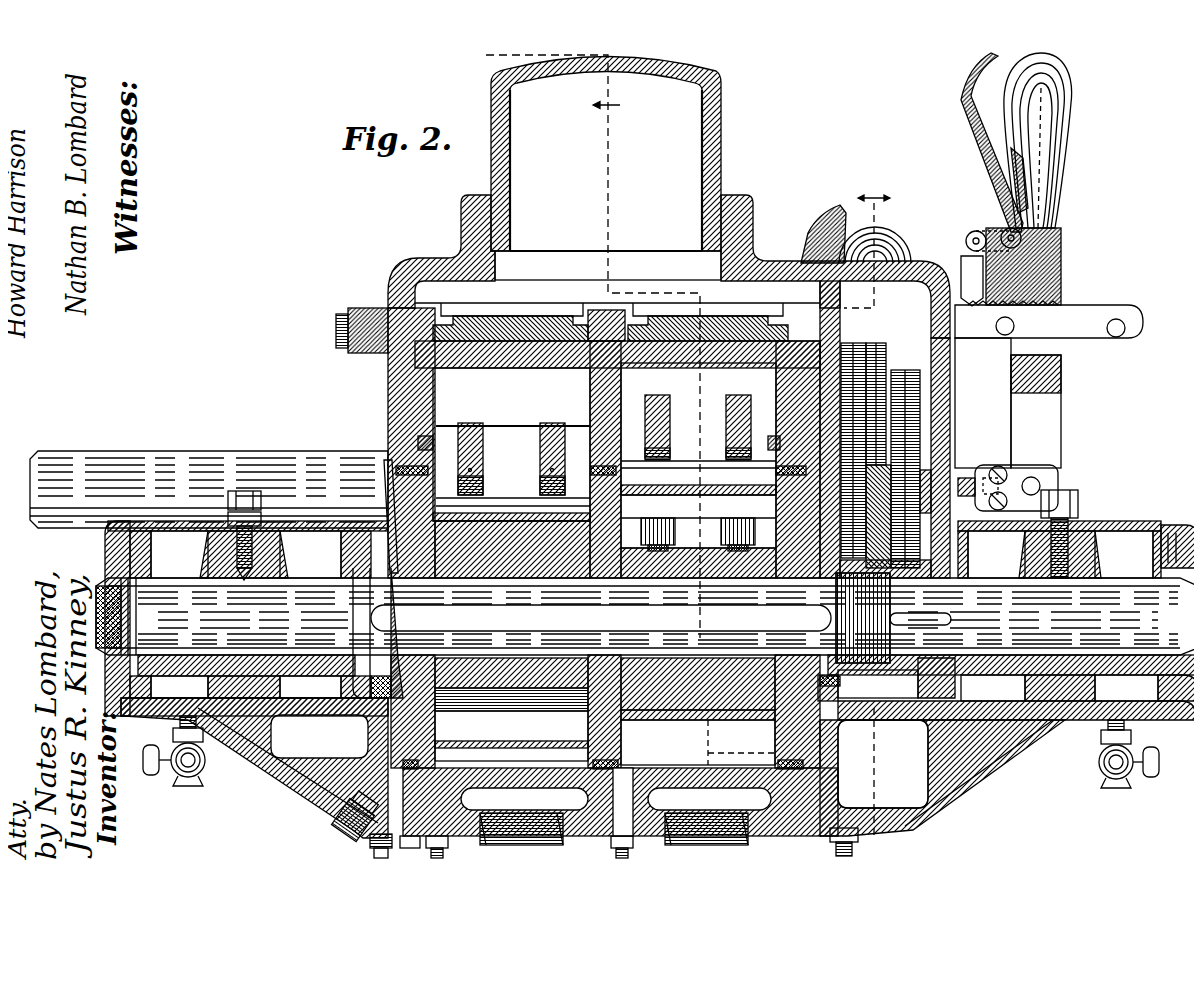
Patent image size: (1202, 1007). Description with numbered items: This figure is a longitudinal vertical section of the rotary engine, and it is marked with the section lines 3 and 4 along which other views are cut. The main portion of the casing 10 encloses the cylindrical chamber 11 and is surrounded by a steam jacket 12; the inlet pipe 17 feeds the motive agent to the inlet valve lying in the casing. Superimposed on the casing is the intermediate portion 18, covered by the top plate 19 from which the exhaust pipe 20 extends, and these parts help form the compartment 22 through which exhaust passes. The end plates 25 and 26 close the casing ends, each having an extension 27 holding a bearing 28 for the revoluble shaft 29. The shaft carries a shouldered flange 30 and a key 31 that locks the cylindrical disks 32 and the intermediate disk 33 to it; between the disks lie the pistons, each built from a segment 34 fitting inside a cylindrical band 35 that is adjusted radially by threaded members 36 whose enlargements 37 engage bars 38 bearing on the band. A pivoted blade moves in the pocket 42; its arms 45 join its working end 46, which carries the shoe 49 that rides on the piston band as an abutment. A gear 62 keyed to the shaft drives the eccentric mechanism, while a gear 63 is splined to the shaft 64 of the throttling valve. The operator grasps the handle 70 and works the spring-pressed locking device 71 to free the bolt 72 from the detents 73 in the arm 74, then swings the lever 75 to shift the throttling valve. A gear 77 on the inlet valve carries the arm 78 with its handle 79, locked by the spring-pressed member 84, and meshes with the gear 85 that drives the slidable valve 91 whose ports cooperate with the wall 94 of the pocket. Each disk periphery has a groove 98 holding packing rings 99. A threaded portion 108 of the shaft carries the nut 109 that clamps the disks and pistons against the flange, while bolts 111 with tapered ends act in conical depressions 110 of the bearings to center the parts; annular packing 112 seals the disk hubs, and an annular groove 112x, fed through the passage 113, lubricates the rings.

The section line 3— 3 is at (613, 456).
The section line 4— 4 is at (860, 517).
The main portion of the casing 10 is at (420, 428).
The cylindrical chamber 11 is at (620, 813).
The steam jacket 12 is at (616, 798).
The inlet pipe 17 is at (145, 443).
The intermediate portion of the casing 18 is at (395, 305).
The top plate 19 is at (428, 255).
The exhaust pipe 20 is at (483, 165).
The compartment 22 is at (593, 309).
The end plate 25 is at (355, 310).
The end plate 26 is at (938, 265).
The extension 27 is at (100, 522).
The bearing 28 is at (222, 708).
The revoluble shaft 29 is at (268, 708).
The shouldered flange 30 is at (292, 700).
The key 31 is at (645, 616).
The cylindrical disks 32 is at (330, 795).
The intermediate disk 33 is at (613, 735).
The segment 34 is at (620, 643).
The cylindrical band 35 is at (582, 508).
The threaded members 36 is at (728, 543).
The enlargements 37 is at (713, 525).
The bars 38 is at (698, 505).
The pocket 42 is at (511, 444).
The arms 45 is at (532, 456).
The working end 46 is at (581, 468).
The shoe 49 is at (672, 462).
The gear 62 is at (905, 664).
The gear 63 is at (898, 366).
The shaft 64 is at (963, 470).
The handle 70 is at (1052, 105).
The spring-pressed locking device 71 is at (955, 96).
The bolt 72 is at (960, 235).
The detents 73 is at (985, 340).
The arm 74 is at (1085, 305).
The lever 75 is at (1053, 410).
The gear 77 is at (878, 516).
The arm 78 is at (870, 340).
The handle 79 is at (882, 228).
The spring-pressed member 84 is at (815, 228).
The gear 85 is at (845, 340).
The slidable valve 91 is at (505, 318).
The wall 94 is at (510, 345).
The groove 98 is at (412, 841).
The rings 99 is at (378, 440).
The threaded portion 108 is at (855, 640).
The nut 109 is at (845, 650).
The conical depressions 110 is at (1080, 556).
The bolts 111 is at (236, 483).
The annular packing 112 is at (410, 462).
The annular groove 112x is at (614, 836).
The passage 113 is at (378, 452).